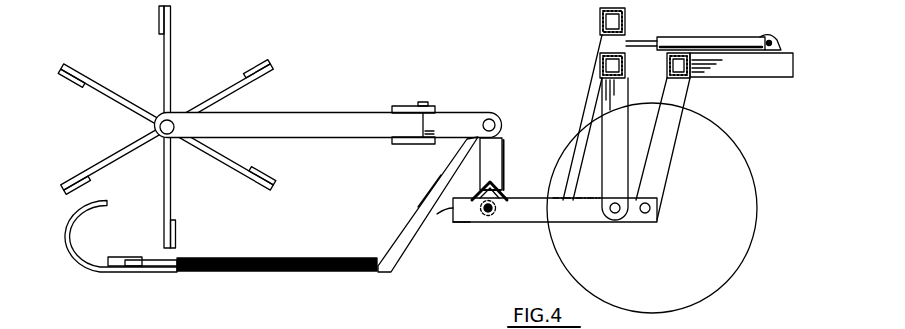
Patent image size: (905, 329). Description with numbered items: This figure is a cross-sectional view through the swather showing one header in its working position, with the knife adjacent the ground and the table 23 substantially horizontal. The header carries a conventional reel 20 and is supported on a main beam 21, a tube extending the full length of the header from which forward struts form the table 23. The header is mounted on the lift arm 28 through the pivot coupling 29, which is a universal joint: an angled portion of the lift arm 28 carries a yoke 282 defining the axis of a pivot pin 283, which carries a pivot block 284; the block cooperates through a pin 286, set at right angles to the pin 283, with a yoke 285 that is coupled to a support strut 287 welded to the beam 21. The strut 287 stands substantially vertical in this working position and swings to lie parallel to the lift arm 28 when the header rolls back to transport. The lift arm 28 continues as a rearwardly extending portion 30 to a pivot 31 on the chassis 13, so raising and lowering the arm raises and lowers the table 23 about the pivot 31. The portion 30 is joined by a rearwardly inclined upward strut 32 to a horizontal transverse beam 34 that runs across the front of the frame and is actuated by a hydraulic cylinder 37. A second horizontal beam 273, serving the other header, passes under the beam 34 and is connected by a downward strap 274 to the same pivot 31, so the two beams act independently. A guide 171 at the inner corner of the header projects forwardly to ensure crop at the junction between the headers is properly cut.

The reel 20 is at (274, 80).
The main beam 21 is at (487, 111).
The support strut 287 is at (504, 150).
The pivot coupling 29 is at (508, 181).
The pin 286 is at (503, 193).
The yoke 285 is at (506, 205).
The pivot block 284 is at (492, 224).
The yoke 282 is at (466, 222).
The pivot pin 283 is at (460, 174).
The lift arm 28 is at (428, 196).
The table area 23 is at (353, 247).
The guide 171 is at (72, 236).
The rearwardly extending portion 30 is at (571, 223).
The upward strut 32 is at (588, 110).
The horizontal transverse beam 34 is at (600, 15).
The horizontal beam 273 is at (600, 60).
The downward strap 274 is at (627, 113).
The pivot 31 is at (604, 220).
The hydraulic cylinder 37 is at (726, 36).
The chassis 13 is at (765, 83).